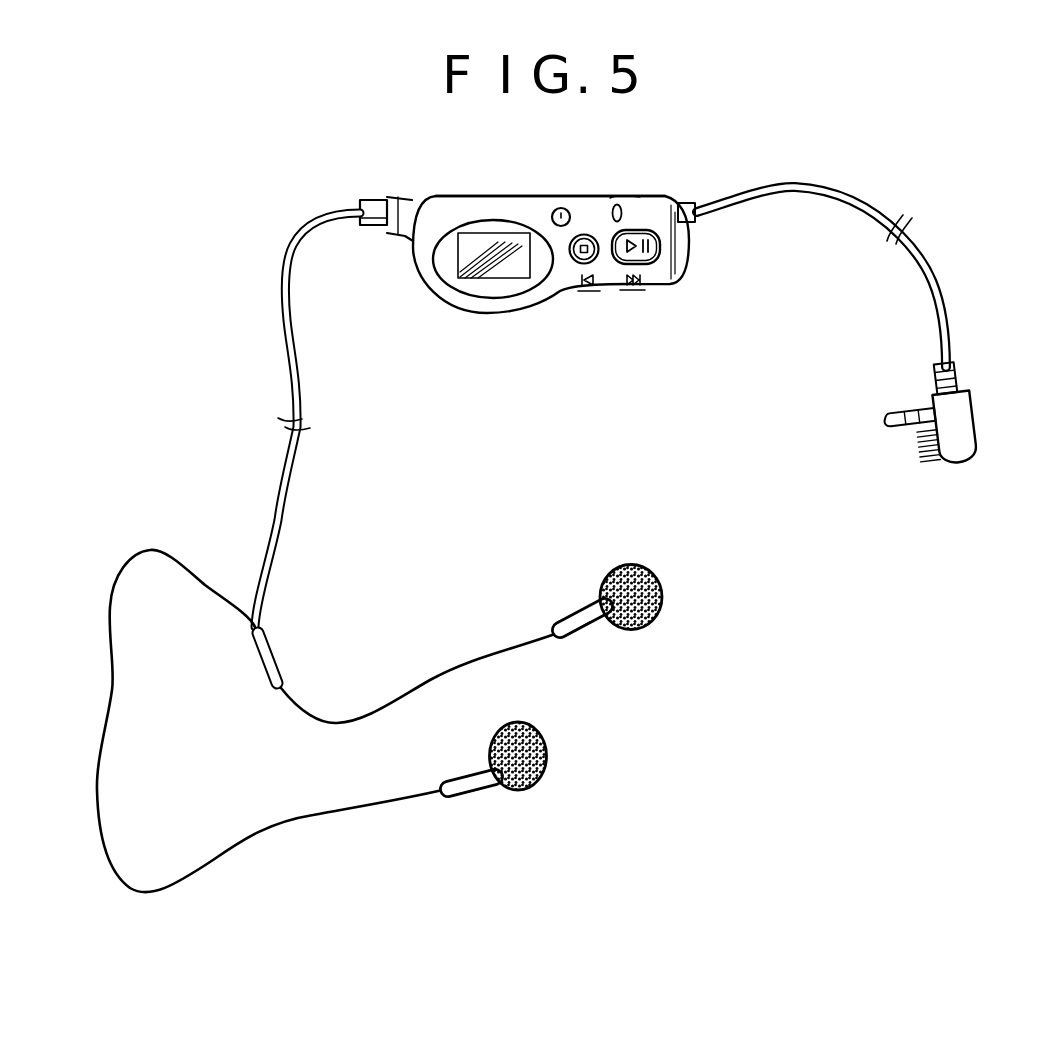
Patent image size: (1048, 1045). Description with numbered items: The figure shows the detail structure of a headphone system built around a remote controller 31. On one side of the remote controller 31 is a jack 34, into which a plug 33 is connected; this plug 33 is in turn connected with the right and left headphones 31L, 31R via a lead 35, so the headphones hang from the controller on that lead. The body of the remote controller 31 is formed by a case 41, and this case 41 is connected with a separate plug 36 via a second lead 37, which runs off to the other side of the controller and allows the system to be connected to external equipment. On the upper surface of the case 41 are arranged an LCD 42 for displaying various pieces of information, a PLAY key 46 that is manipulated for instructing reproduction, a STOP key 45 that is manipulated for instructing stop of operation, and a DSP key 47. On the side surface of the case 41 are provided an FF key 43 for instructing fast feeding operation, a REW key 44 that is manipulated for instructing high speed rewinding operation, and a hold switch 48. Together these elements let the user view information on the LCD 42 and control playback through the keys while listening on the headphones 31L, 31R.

The remote controller 31 is at (500, 320).
The left headphone 31L is at (662, 593).
The right headphone 31R is at (548, 757).
The plug 33 is at (372, 203).
The jack 34 is at (393, 240).
The lead 35 is at (288, 298).
The plug 36 is at (960, 421).
The lead 37 is at (790, 191).
The case 41 is at (456, 197).
The LCD 42 is at (487, 273).
The FF key 43 is at (638, 289).
The REW key 44 is at (588, 289).
The STOP key 45 is at (577, 268).
The PLAY key 46 is at (688, 247).
The DSP key 47 is at (556, 209).
The hold switch 48 is at (618, 197).